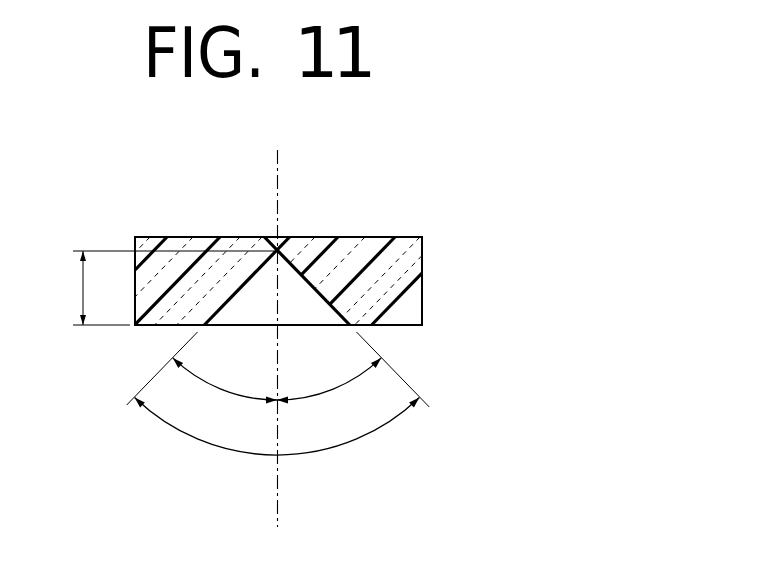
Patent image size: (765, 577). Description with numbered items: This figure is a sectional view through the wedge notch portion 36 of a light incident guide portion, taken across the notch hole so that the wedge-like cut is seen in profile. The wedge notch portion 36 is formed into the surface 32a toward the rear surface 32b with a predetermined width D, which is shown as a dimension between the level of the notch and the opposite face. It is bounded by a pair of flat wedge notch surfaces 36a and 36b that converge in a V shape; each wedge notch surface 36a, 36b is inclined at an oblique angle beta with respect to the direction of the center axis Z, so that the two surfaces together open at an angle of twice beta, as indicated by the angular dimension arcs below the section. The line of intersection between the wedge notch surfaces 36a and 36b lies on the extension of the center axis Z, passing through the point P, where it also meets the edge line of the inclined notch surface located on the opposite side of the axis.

The surface 32a is at (165, 326).
The rear surface 32b is at (397, 238).
The wedge notch portion 36 is at (296, 309).
The wedge notch surface 36a is at (237, 296).
The wedge notch surface 36b is at (316, 292).
The point P is at (281, 251).
The width D is at (83, 289).
The center axis Z is at (281, 510).